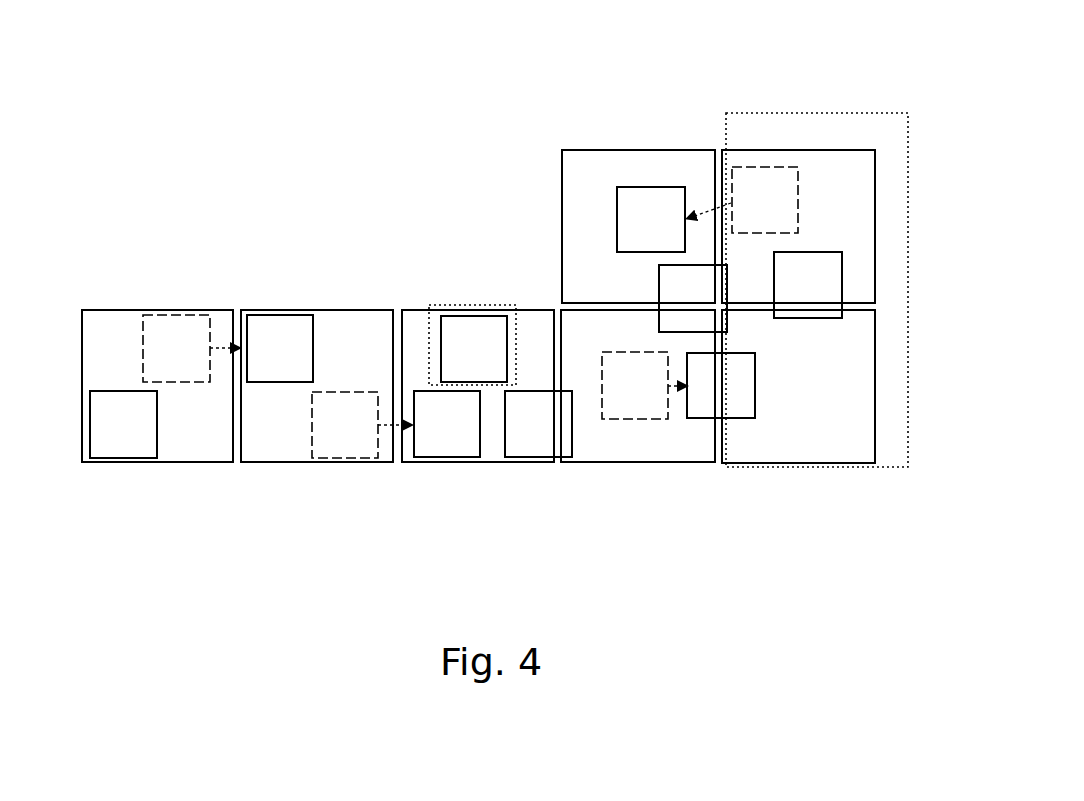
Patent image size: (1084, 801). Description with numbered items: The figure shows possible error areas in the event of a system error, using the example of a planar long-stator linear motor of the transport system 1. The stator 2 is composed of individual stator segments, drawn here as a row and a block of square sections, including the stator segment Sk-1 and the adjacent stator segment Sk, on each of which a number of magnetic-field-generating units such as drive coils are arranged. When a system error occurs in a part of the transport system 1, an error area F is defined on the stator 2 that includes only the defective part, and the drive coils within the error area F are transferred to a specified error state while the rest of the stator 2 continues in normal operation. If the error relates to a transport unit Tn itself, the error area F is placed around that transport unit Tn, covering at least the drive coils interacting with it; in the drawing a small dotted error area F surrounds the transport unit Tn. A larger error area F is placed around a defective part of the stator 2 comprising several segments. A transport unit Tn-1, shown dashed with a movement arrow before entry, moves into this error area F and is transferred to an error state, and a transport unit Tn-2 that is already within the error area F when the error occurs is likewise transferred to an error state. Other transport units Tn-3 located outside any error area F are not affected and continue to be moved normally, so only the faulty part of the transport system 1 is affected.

The transport system 1 is at (743, 304).
The stator 2 is at (493, 280).
The stator segment Sk-1 is at (155, 375).
The stator segment Sk is at (316, 308).
The error area F is at (459, 305).
The transport unit Tn is at (484, 333).
The transport unit Tn-1 is at (702, 420).
The transport unit Tn-2 is at (820, 252).
The transport unit Tn-3 is at (117, 438).